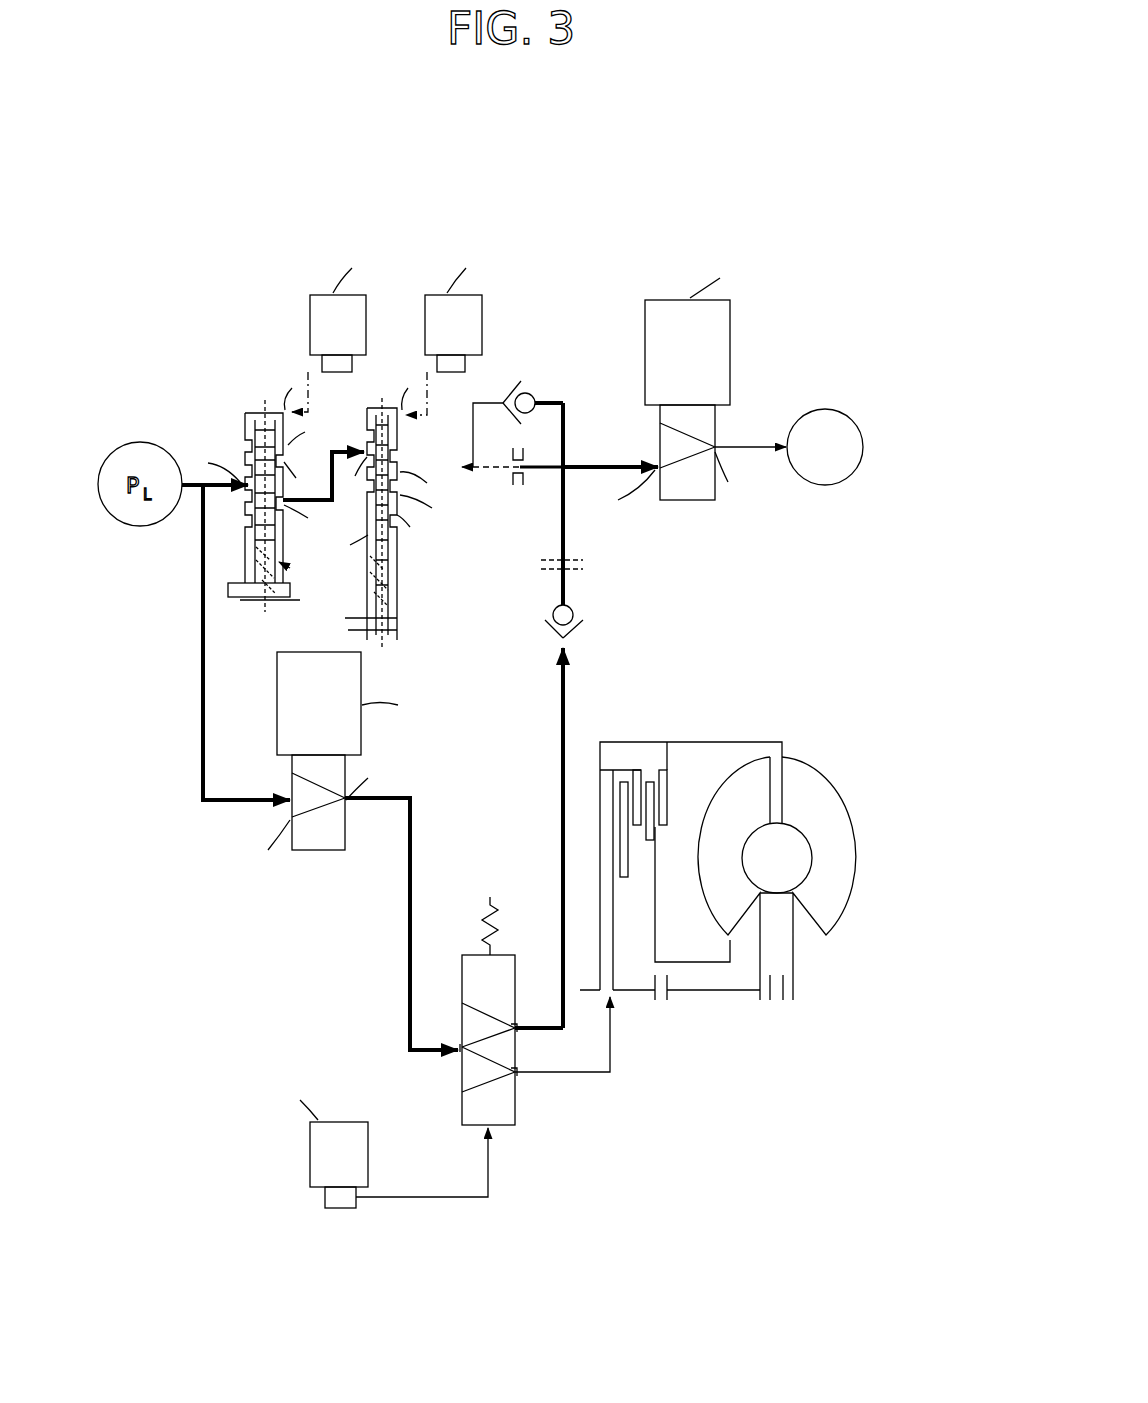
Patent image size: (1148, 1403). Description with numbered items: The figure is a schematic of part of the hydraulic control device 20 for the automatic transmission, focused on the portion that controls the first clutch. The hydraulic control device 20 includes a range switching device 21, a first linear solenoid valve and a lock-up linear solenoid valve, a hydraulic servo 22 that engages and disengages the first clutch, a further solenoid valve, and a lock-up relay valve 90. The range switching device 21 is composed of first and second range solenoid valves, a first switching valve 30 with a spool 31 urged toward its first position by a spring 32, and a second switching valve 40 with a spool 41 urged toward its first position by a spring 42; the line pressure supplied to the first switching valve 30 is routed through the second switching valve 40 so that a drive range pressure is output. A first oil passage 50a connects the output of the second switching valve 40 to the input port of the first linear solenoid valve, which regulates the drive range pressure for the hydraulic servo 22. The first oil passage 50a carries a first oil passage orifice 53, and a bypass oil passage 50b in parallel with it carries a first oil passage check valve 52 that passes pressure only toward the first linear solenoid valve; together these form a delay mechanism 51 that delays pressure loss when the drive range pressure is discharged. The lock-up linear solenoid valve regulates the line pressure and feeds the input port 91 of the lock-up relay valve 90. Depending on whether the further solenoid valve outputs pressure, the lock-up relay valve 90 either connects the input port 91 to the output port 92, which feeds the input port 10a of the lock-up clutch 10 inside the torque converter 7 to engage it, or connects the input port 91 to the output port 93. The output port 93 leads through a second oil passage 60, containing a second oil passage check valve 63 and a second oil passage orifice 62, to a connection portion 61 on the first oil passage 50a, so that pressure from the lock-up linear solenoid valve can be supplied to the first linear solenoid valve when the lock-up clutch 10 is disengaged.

The torque converter 7 is at (822, 754).
The lock-up clutch 10 is at (632, 727).
The input port of the lock-up clutch 10a is at (615, 1003).
The hydraulic control device 20 is at (552, 164).
The range switching device 21 is at (195, 277).
The hydraulic servo 22 is at (828, 409).
The first switching valve 30 is at (240, 395).
The spool 31 is at (246, 438).
The spring 32 is at (256, 560).
The second switching valve 40 is at (372, 400).
The spool 41 is at (366, 438).
The spring 42 is at (368, 590).
The first oil passage 50a is at (550, 478).
The bypass oil passage 50b is at (544, 401).
The delay mechanism 51 is at (510, 485).
The first oil passage check valve 52 is at (517, 390).
The first oil passage orifice 53 is at (518, 488).
The second oil passage 60 is at (558, 693).
The connection portion 61 is at (572, 467).
The second oil passage orifice 62 is at (583, 565).
The second oil passage check valve 63 is at (575, 612).
The lock-up relay valve 90 is at (505, 930).
The input port 91 is at (460, 1052).
The output port 92 is at (517, 1075).
The output port 93 is at (517, 1027).